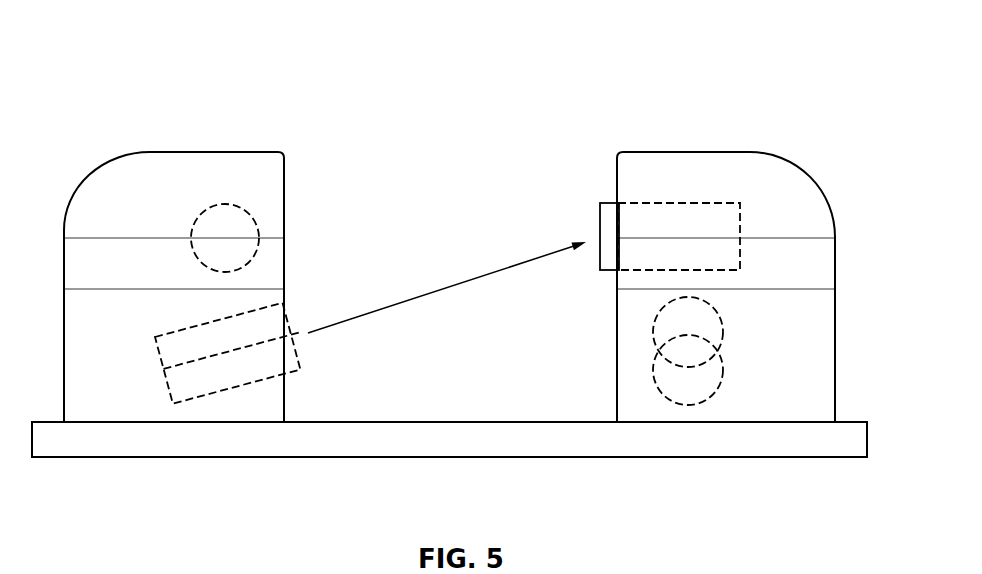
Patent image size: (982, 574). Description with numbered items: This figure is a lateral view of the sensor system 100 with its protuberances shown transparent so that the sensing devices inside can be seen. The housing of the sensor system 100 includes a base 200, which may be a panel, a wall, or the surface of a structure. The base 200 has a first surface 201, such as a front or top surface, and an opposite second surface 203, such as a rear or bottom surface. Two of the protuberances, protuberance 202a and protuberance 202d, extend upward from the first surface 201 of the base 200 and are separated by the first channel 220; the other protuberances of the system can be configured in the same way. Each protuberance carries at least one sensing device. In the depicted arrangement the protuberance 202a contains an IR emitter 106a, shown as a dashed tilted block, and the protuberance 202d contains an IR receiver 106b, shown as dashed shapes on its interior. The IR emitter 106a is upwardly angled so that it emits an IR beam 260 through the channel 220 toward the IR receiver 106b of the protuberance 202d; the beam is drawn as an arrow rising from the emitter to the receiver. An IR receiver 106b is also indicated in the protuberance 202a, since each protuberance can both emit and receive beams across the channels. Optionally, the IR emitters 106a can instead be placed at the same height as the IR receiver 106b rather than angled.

The sensor system 100 is at (124, 39).
The base 200 is at (553, 457).
The first surface 201 is at (498, 418).
The second surface 203 is at (720, 457).
The protuberance 202a is at (117, 155).
The protuberance 202d is at (745, 152).
The IR emitter 106a is at (267, 368).
The IR receiver 106b is at (227, 203).
The IR beam 260 is at (397, 302).
The first channel 220 is at (515, 128).